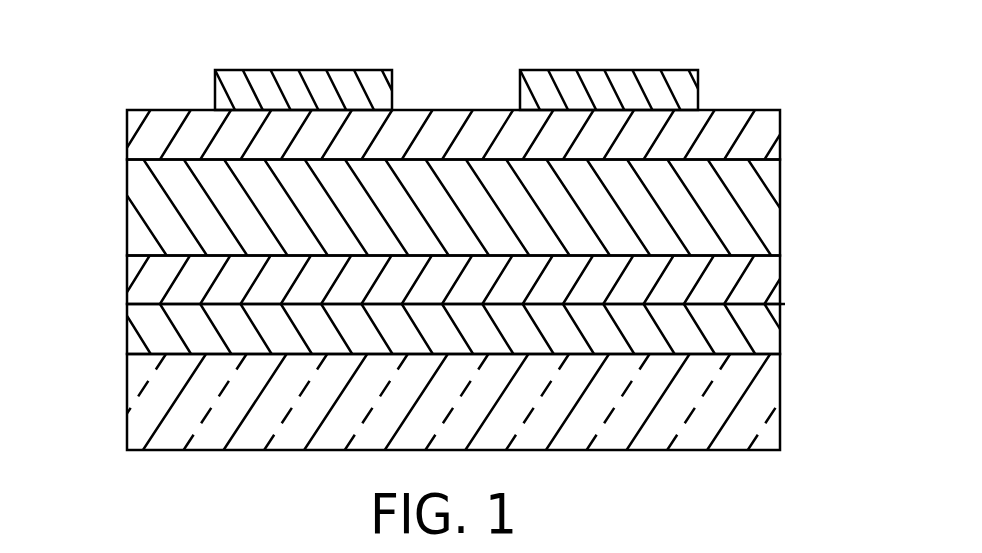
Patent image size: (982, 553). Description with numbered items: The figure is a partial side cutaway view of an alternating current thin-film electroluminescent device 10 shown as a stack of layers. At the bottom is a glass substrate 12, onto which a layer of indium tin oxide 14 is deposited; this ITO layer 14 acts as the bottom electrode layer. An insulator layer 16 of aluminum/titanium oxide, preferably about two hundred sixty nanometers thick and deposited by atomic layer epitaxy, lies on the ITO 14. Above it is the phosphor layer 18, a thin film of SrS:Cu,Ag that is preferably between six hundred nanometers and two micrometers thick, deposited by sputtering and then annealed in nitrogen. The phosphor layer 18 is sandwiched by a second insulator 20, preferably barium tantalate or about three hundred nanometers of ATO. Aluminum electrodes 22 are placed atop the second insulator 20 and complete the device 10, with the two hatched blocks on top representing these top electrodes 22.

The alternating current thin-film electroluminescent device 10 is at (108, 70).
The glass substrate 12 is at (780, 382).
The layer of indium tin oxide (ITO) 14 is at (780, 320).
The insulator layer 16 is at (780, 270).
The phosphor layer 18 is at (780, 190).
The second insulator 20 is at (780, 130).
The aluminum electrodes 22 is at (315, 70).